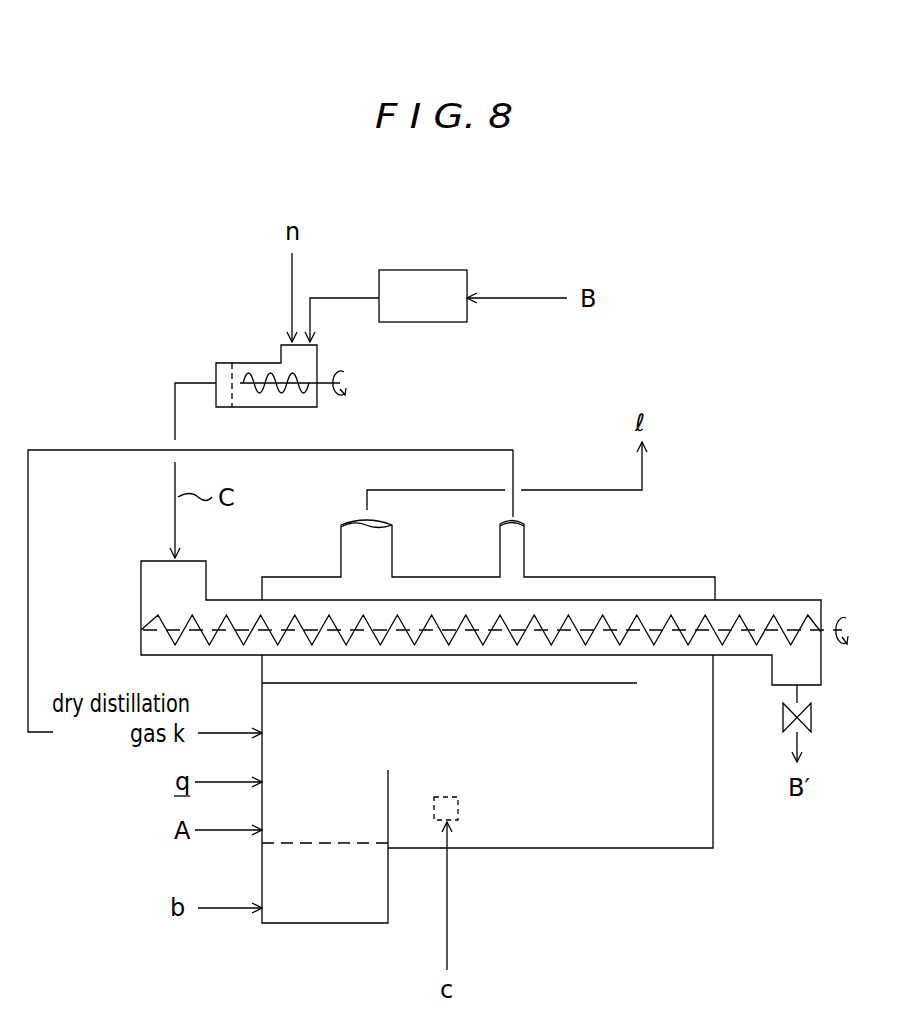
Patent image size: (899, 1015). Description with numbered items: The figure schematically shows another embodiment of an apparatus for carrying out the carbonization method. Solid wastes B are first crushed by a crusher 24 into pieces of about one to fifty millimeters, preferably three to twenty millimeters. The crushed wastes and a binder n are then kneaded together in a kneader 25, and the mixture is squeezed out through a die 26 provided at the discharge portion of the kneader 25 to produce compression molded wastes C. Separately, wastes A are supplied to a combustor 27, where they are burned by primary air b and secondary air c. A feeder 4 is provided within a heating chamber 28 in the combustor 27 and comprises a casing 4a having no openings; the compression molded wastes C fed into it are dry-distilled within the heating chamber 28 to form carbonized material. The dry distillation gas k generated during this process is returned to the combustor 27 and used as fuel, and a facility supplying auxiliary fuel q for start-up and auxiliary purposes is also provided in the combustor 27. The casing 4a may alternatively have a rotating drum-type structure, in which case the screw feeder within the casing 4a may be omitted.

The crusher 24 is at (440, 270).
The kneader 25 is at (250, 363).
The die 26 is at (216, 365).
The combustor 27 is at (580, 577).
The feeder 4 is at (770, 600).
The casing 4a is at (595, 612).
The heating chamber 28 is at (428, 668).